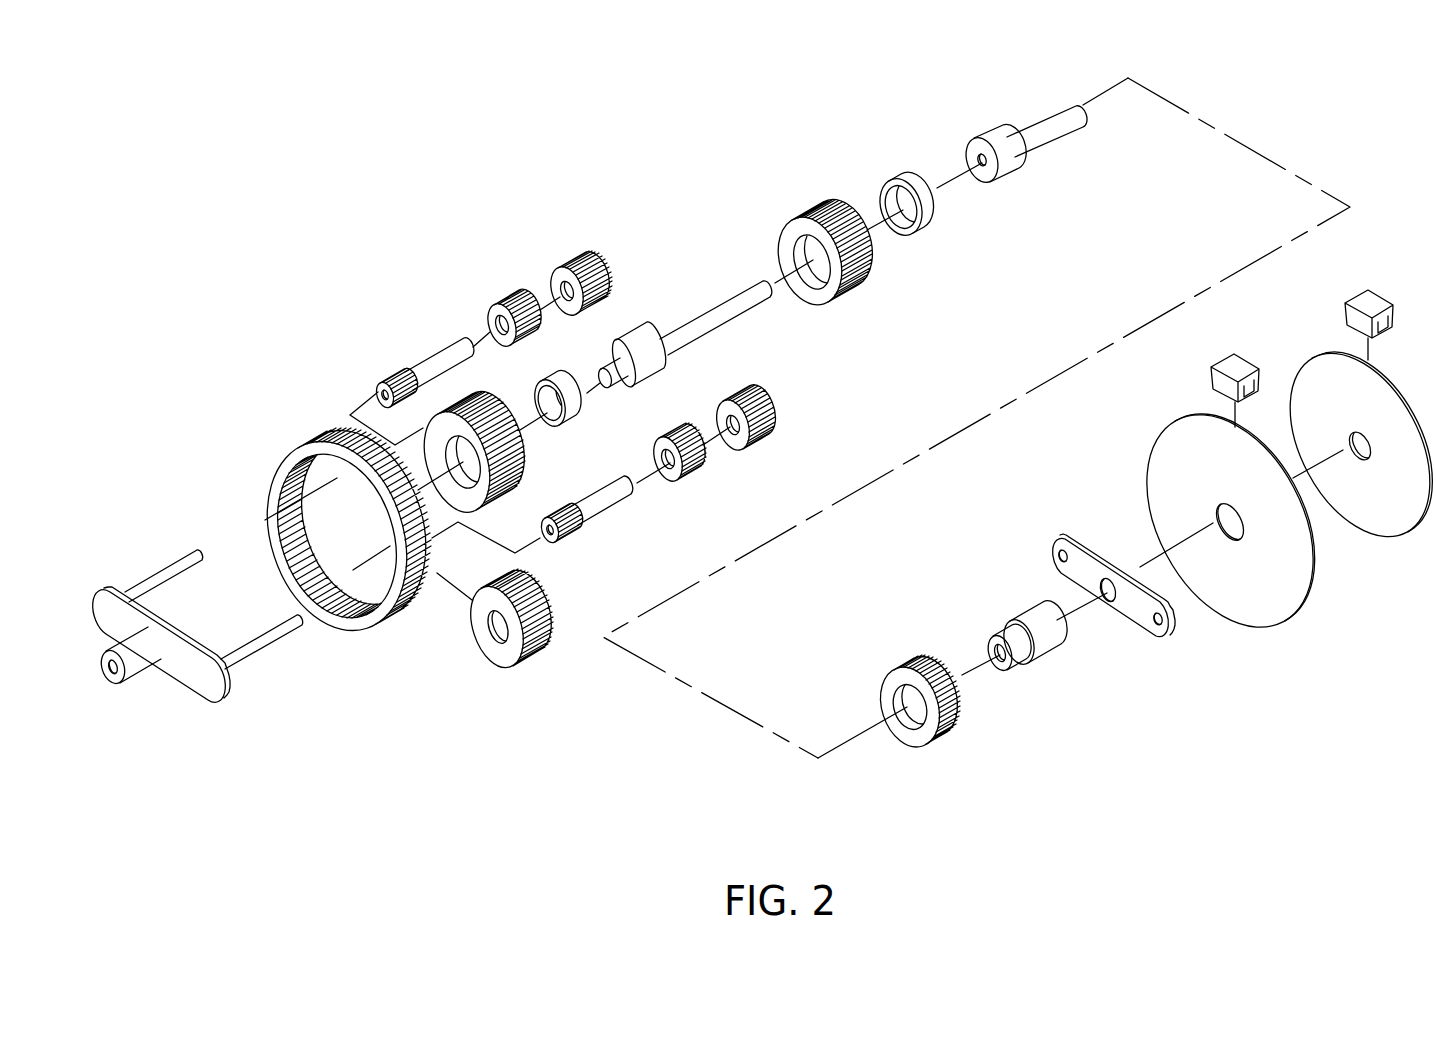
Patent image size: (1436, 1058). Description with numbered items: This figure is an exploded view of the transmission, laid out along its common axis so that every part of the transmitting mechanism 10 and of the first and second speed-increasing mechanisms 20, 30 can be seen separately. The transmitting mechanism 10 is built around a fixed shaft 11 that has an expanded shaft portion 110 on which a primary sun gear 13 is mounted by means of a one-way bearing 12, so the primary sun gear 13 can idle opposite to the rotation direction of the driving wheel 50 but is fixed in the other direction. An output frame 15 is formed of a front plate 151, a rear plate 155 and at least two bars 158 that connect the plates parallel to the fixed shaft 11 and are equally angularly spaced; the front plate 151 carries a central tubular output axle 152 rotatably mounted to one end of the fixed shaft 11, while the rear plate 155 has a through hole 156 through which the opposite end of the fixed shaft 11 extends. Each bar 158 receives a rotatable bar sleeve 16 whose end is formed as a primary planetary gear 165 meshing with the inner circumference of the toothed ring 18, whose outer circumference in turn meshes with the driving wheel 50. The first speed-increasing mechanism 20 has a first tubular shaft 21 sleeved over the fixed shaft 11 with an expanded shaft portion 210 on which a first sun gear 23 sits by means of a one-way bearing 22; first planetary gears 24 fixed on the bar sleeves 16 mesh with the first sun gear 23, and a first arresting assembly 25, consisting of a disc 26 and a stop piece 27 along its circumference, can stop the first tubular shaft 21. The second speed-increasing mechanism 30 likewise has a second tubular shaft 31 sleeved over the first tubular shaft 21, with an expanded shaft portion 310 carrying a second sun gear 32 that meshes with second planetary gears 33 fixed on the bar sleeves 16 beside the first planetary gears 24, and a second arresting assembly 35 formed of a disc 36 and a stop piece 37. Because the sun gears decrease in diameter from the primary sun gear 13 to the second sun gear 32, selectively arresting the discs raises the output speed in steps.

The transmitting mechanism 10 is at (291, 368).
The fixed shaft 11 is at (712, 305).
The expanded shaft portion 110 is at (639, 341).
The one-way bearing 12 is at (537, 397).
The primary sun gear 13 is at (433, 437).
The output frame 15 is at (184, 643).
The front plate 151 is at (180, 672).
The tubular output axle 152 is at (133, 677).
The rear plate 155 is at (1074, 601).
The through hole 156 is at (1110, 600).
The bars 158 is at (156, 572).
The bar sleeve 16 is at (433, 358).
The primary planetary gear 165 is at (386, 374).
The toothed ring 18 is at (270, 470).
The first speed-increasing mechanism 20 is at (586, 375).
The first tubular shaft 21 is at (1000, 109).
The expanded shaft portion 210 is at (983, 142).
The one-way bearing 22 is at (898, 185).
The first sun gear 23 is at (810, 210).
The first planetary gears 24 is at (497, 320).
The first arresting assembly 25 is at (1348, 427).
The disc 26 is at (1305, 360).
The stop piece 27 is at (1372, 300).
The second speed-increasing mechanism 30 is at (673, 328).
The second tubular shaft 31 is at (981, 607).
The expanded shaft portion 310 is at (1003, 632).
The second sun gear 32 is at (890, 682).
The second planetary gears 33 is at (585, 257).
The second arresting assembly 35 is at (1230, 503).
The disc 36 is at (1177, 430).
The stop piece 37 is at (1243, 350).
The driving wheel 50 is at (497, 650).